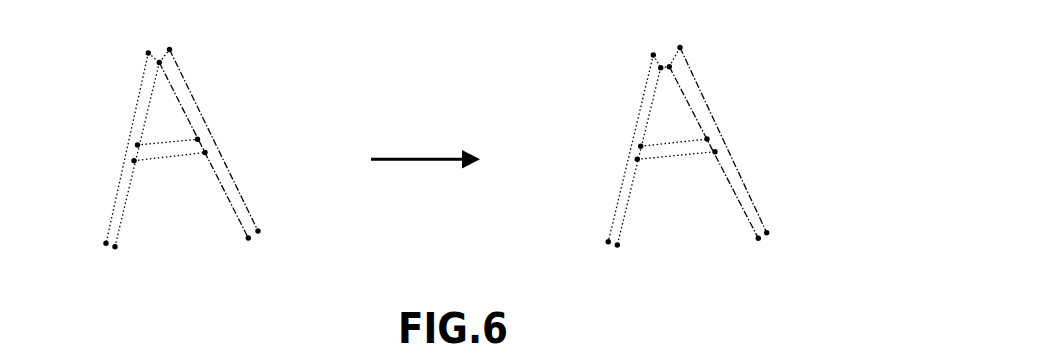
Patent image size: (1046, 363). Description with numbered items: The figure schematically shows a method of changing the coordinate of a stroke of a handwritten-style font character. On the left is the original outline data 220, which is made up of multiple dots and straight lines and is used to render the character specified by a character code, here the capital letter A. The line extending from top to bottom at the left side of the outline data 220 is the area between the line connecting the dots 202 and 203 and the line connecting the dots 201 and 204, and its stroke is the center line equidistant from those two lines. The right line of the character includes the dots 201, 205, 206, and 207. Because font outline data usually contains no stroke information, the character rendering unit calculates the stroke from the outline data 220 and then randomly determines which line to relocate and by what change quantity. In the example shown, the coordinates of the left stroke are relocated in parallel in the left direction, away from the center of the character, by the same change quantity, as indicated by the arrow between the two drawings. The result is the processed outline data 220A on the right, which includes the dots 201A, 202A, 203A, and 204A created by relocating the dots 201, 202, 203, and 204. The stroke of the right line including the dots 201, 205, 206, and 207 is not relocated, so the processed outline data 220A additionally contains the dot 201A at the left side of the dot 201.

The dot 201 is at (159, 63).
The dot 202 is at (148, 53).
The dot 203 is at (106, 243).
The dot 204 is at (115, 247).
The dot 205 is at (170, 49).
The dot 206 is at (248, 237).
The dot 207 is at (258, 231).
The outline data 220 is at (271, 166).
The dot 201A is at (661, 68).
The dot 202A is at (653, 55).
The dot 203A is at (608, 242).
The dot 204A is at (617, 245).
The processed outline data 220A is at (769, 166).